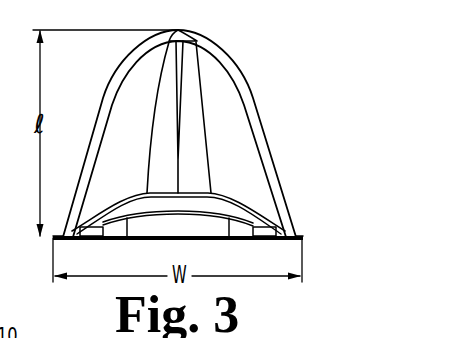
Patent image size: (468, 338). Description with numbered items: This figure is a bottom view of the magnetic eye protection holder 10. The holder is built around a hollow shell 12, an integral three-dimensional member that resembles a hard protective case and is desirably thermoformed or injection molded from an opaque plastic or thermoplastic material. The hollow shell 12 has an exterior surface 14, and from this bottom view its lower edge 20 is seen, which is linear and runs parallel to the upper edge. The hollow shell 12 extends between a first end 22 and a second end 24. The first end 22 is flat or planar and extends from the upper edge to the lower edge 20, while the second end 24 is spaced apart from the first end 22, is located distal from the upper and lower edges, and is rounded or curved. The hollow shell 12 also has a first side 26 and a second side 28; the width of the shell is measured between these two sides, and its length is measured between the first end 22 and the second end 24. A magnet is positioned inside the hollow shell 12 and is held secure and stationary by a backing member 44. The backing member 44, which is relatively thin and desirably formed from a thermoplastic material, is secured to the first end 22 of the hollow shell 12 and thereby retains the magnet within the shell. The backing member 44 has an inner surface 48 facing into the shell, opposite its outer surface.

The magnetic eye protection holder 10 is at (178, 141).
The hollow shell 12 is at (265, 138).
The exterior surface 14 is at (240, 68).
The second end 24 is at (178, 30).
The backing member 44 is at (137, 240).
The first end 22 is at (84, 239).
The lower edge 20 is at (223, 238).
The inner surface 48 is at (304, 241).
The first side 26 is at (301, 238).
The second side 28 is at (53, 239).